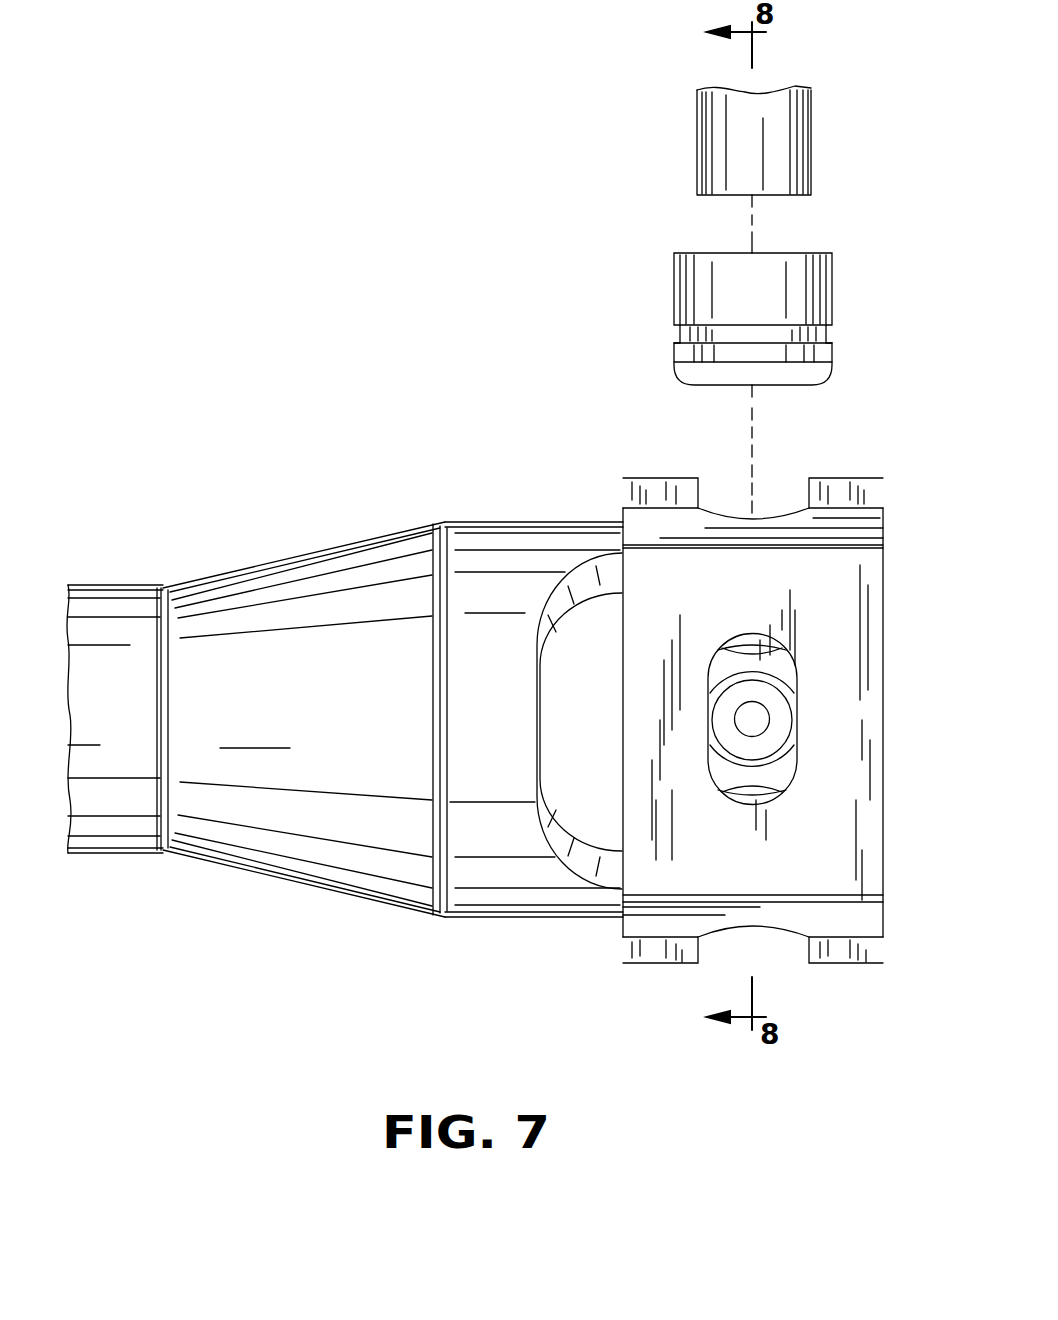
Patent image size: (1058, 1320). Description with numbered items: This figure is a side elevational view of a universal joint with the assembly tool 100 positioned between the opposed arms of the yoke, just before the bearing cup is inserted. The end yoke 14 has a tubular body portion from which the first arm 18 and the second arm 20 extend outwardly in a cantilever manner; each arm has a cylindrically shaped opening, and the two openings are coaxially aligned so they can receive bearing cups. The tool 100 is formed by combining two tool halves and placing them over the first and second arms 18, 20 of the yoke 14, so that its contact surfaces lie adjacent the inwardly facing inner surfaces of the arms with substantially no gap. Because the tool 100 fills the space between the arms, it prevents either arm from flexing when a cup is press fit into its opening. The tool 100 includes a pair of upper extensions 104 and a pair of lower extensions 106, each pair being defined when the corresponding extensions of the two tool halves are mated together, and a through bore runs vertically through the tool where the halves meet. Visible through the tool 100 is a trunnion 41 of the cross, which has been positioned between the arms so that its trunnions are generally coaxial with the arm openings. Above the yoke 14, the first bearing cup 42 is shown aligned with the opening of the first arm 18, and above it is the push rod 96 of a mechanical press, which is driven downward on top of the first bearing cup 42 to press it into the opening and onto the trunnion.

The end yoke 14 is at (215, 572).
The first arm 18 is at (603, 521).
The second arm 20 is at (607, 920).
The trunnion 41 is at (785, 720).
The first bearing cup 42 is at (675, 295).
The push rod 96 is at (697, 153).
The tool 100 is at (888, 623).
The upper extensions 104 is at (665, 478).
The lower extensions 106 is at (657, 963).